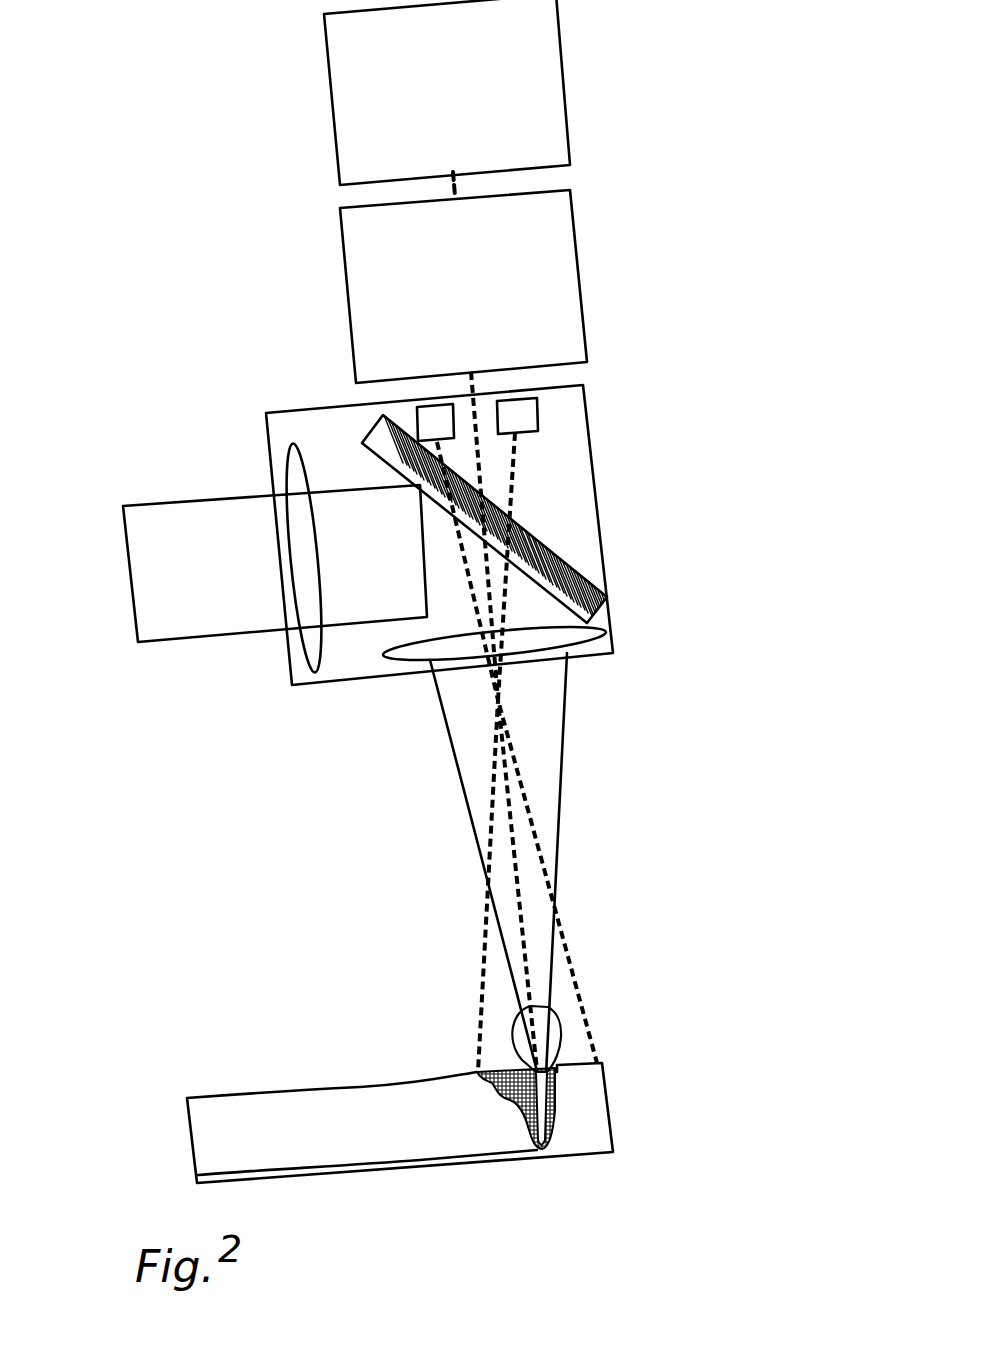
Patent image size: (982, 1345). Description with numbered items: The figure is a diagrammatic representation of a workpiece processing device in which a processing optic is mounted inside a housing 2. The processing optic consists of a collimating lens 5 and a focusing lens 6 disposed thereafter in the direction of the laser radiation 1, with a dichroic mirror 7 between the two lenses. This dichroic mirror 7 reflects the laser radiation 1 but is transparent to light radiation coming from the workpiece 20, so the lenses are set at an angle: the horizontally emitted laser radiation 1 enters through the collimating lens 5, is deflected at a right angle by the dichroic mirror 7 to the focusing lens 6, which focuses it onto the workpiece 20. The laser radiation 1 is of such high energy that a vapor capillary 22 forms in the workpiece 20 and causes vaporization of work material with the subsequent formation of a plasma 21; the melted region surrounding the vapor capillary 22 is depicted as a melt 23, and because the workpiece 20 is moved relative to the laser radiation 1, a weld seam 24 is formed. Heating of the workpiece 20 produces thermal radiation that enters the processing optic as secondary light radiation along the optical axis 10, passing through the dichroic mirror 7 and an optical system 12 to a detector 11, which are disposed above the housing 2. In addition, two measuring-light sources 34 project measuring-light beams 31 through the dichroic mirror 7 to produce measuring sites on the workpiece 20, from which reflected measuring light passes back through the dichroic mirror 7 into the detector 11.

The laser radiation 1 is at (155, 565).
The housing 2 is at (600, 500).
The collimating lens 5 is at (302, 508).
The focusing lens 6 is at (457, 650).
The dichroic mirror 7 is at (565, 562).
The optical axis 10 is at (512, 777).
The detector 11 is at (538, 77).
The optical system 12 is at (553, 267).
The workpiece 20 is at (588, 1105).
The plasma 21 is at (553, 1030).
The vapor capillary 22 is at (543, 1132).
The melt 23 is at (477, 1072).
The weld seam 24 is at (333, 1125).
The measuring-light beams 31 is at (493, 850).
The measuring-light sources 34 is at (512, 415).